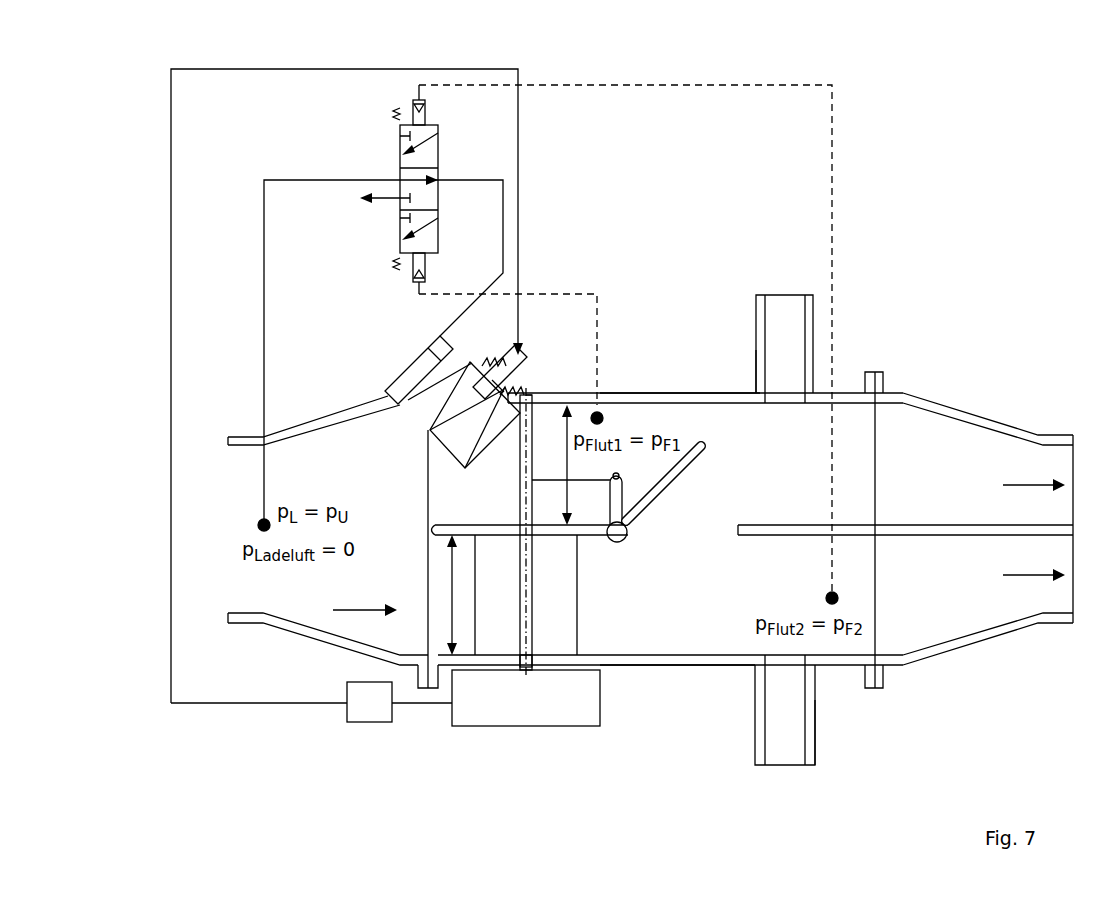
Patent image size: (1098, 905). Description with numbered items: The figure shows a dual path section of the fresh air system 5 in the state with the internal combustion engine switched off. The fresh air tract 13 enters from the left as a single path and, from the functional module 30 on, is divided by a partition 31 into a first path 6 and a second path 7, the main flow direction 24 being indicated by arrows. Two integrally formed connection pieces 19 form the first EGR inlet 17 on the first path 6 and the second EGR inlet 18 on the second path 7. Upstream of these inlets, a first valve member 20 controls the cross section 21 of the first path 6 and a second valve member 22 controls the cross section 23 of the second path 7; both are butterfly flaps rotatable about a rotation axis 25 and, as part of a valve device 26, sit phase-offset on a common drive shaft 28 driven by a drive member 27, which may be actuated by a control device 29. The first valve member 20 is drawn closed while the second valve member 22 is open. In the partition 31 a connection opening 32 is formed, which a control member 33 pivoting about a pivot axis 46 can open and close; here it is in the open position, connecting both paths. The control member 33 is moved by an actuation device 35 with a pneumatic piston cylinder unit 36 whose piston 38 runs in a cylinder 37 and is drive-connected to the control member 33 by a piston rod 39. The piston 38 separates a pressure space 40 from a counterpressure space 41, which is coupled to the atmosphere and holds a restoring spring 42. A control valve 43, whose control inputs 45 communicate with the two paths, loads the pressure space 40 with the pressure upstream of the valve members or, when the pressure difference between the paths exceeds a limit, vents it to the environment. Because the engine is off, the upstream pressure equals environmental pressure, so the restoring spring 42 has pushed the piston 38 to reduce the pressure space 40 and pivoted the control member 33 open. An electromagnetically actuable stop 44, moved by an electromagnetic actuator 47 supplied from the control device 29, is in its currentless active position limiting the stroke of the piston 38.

The fresh air system 5 is at (915, 232).
The first path 6 is at (661, 412).
The second path 7 is at (697, 640).
The fresh air tract 13 is at (228, 428).
The first EGR inlet 17 is at (787, 305).
The second EGR inlet 18 is at (785, 755).
The connection piece 19 is at (756, 345).
The first valve member 20 is at (518, 503).
The cross section through which fluid can flow 21 is at (570, 480).
The second valve member 22 is at (512, 600).
The cross section through which fluid can flow 23 is at (450, 592).
The main flow direction 24 is at (370, 608).
The rotation axis 25 is at (537, 378).
The valve device 26 is at (525, 735).
The drive member 27 is at (493, 724).
The drive shaft 28 is at (545, 665).
The control device 29 is at (382, 718).
The functional module 30 is at (672, 672).
The partition 31 is at (790, 524).
The connection opening 32 is at (740, 522).
The control member 33 is at (655, 485).
The actuation device 35 is at (383, 322).
The pneumatic piston cylinder unit 36 is at (385, 355).
The cylinder 37 is at (408, 420).
The piston 38 is at (428, 345).
The piston rod 39 is at (460, 472).
The pressure space 40 is at (384, 384).
The counterpressure space 41 is at (392, 405).
The restoring spring 42 is at (437, 415).
The control valve 43 is at (440, 142).
The stop 44 is at (476, 368).
The control inputs 45 is at (430, 112).
The pivot axis 46 is at (616, 546).
The electromagnetic actuator 47 is at (527, 348).